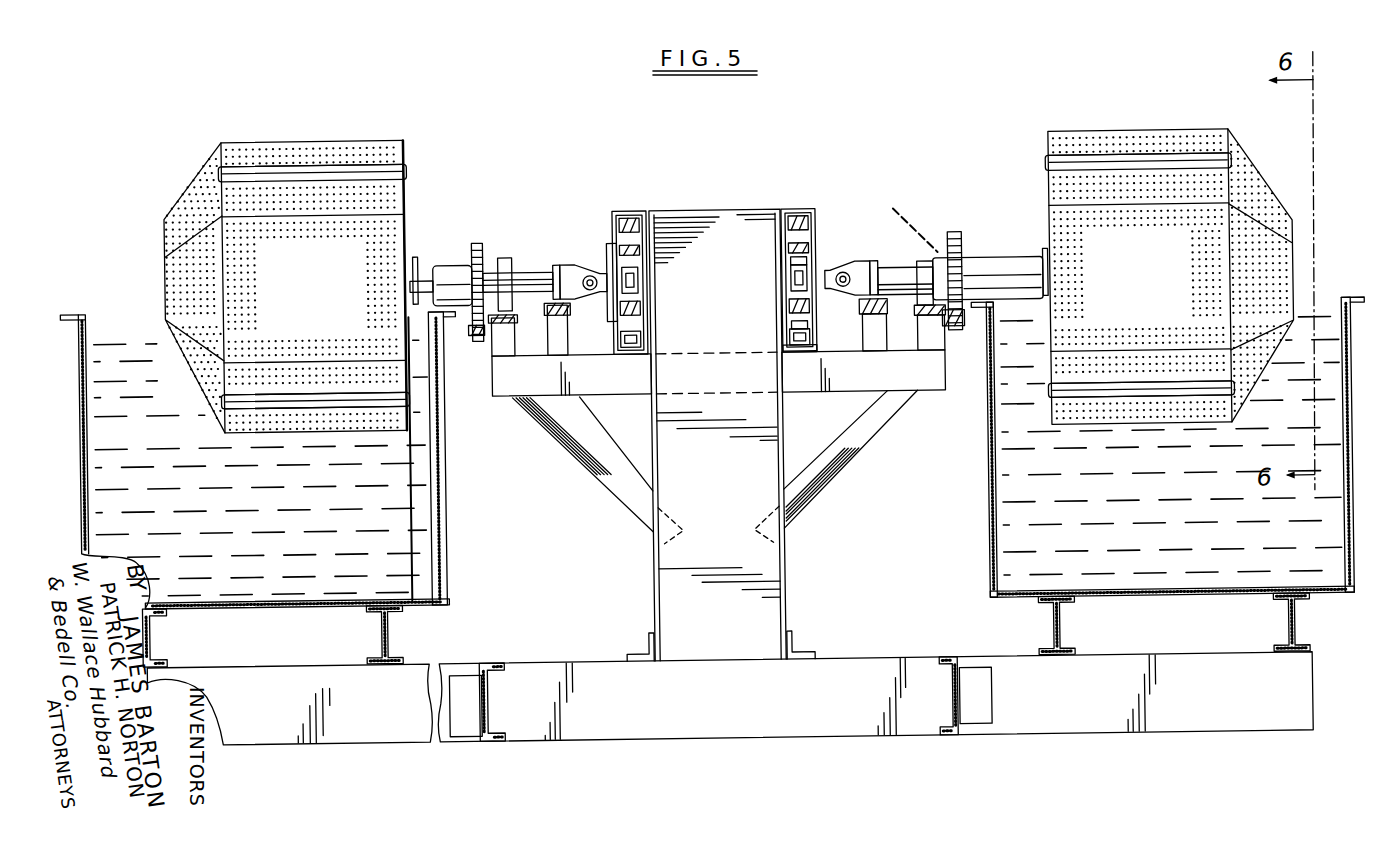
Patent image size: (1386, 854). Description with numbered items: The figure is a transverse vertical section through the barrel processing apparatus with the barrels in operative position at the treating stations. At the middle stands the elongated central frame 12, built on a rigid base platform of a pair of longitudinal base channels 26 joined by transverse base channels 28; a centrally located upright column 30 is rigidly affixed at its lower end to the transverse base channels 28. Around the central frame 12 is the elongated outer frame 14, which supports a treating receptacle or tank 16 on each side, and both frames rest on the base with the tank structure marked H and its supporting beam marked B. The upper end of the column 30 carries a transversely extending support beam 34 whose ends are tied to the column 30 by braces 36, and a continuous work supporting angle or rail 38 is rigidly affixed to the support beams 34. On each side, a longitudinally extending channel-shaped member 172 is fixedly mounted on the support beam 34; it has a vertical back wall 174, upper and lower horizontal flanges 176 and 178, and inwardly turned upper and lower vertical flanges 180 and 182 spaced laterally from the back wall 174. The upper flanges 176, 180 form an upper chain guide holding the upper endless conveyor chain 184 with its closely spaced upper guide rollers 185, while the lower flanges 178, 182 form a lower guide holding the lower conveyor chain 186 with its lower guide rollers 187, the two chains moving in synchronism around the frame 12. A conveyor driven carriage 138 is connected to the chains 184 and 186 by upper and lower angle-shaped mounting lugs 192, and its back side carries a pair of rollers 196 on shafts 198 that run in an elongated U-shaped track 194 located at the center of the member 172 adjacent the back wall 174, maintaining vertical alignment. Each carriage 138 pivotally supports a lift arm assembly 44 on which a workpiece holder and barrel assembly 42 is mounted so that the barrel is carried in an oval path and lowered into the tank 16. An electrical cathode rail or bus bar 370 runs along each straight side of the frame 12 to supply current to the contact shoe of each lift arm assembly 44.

The central frame 12 is at (636, 645).
The outer frame 14 is at (730, 723).
The treating receptacle 16 is at (707, 453).
The longitudinal base channel 26 is at (483, 719).
The transverse base channel 28 is at (622, 738).
The upright column 30 is at (782, 618).
The support beam 34 is at (513, 377).
The brace 36 is at (632, 484).
The work supporting rail 38 is at (720, 299).
The workpiece holder and barrel assembly 42 is at (297, 123).
The lift arm assembly 44 is at (729, 274).
The carriage 138 is at (848, 271).
The channel-shaped member 172 is at (626, 284).
The back wall 174 is at (803, 296).
The upper horizontal flange 176 is at (803, 213).
The lower horizontal flange 178 is at (806, 359).
The upper vertical flange 180 is at (822, 234).
The lower vertical flange 182 is at (823, 336).
The upper conveyor chain 184 is at (633, 217).
The upper guide roller 185 is at (827, 237).
The lower conveyor chain 186 is at (633, 341).
The lower guide roller 187 is at (798, 328).
The mounting lug 192 is at (790, 254).
The U-shaped track 194 is at (630, 271).
The guide roller 196 is at (628, 281).
The roller shaft 198 is at (604, 302).
The cathode rail 370 is at (534, 357).
The tank H is at (80, 435).
The support beam B is at (1318, 604).